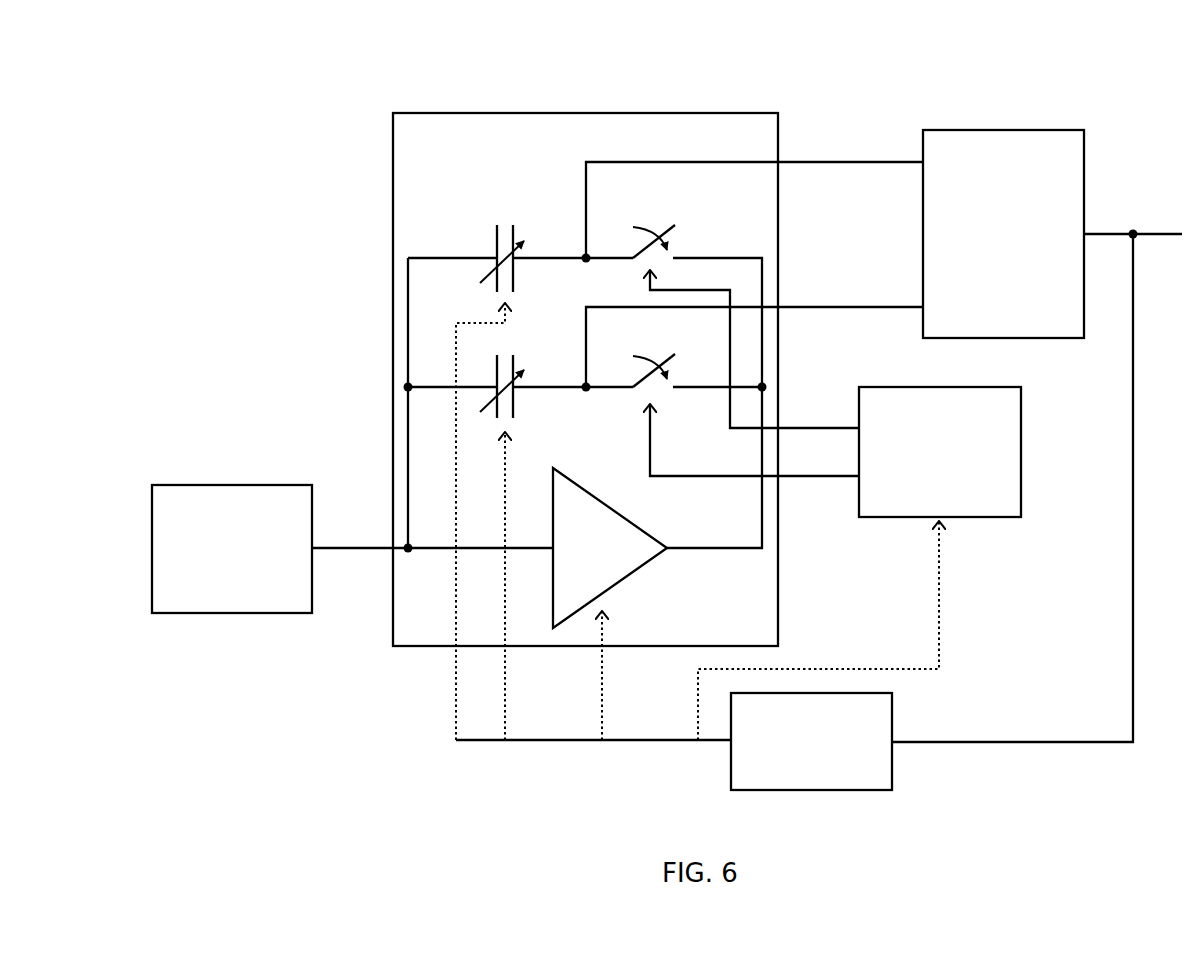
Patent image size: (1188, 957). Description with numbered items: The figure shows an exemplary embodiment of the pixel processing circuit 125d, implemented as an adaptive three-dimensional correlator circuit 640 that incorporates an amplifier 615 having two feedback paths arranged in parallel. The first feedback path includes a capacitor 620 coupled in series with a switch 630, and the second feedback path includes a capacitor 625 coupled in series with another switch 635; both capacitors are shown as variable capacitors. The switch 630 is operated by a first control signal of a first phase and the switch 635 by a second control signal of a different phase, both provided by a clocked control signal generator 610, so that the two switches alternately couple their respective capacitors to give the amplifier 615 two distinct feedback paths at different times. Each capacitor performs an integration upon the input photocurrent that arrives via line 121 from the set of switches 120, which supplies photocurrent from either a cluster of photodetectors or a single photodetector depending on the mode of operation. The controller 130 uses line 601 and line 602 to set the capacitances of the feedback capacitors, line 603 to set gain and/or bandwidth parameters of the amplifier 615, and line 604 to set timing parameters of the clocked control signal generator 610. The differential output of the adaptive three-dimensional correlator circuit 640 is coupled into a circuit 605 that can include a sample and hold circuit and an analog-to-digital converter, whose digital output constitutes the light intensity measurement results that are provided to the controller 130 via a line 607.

The pixel processing circuit 125d is at (842, 80).
The adaptive 3D correlator circuit 640 is at (585, 379).
The set of switches 120 is at (232, 549).
The line 121 is at (320, 545).
The amplifier 615 is at (610, 548).
The capacitor 620 is at (545, 250).
The capacitor 625 is at (539, 379).
The switch 630 is at (687, 244).
The switch 635 is at (681, 372).
The circuit 605 is at (1003, 234).
The line 607 is at (1135, 486).
The clocked control signal generator 610 is at (940, 452).
The controller 130 is at (811, 741).
The line 601 is at (454, 710).
The line 602 is at (507, 710).
The line 603 is at (604, 710).
The line 604 is at (941, 593).